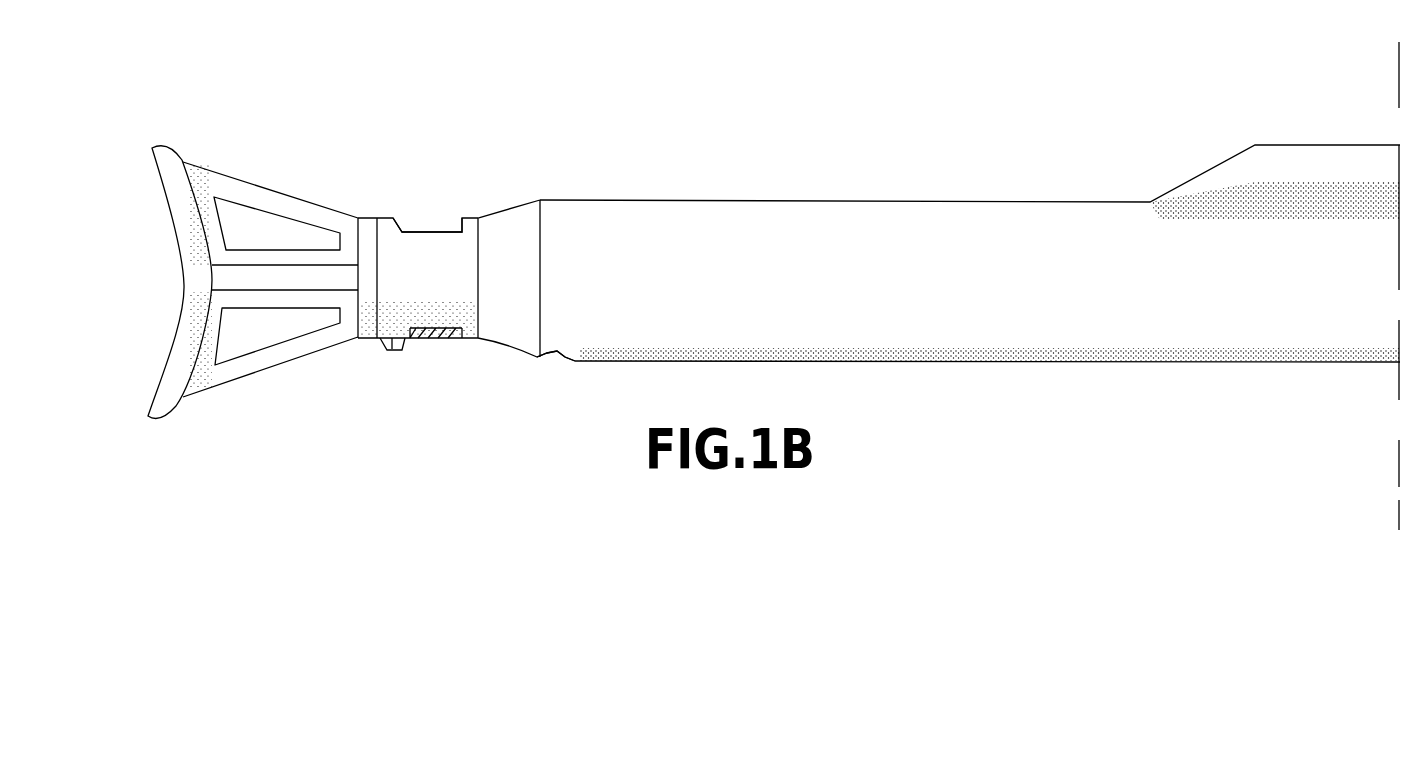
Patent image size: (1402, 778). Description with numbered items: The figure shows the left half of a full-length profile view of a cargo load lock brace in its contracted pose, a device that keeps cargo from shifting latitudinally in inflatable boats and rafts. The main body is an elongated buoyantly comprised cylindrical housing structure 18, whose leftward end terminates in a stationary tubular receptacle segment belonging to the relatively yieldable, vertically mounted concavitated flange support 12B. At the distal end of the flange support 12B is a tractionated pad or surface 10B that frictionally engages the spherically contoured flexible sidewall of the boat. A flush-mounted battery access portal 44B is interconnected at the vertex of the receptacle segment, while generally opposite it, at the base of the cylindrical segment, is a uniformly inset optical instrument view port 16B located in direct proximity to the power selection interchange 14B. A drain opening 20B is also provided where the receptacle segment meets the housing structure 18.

The tractionated pad 10B is at (177, 225).
The concavitated flange support 12B is at (267, 197).
The power selection interchange 14B is at (392, 345).
The optical instrument view port 16B is at (442, 337).
The buoyant housing structure 18 is at (822, 207).
The drain opening 20B is at (558, 357).
The battery access portal 44B is at (425, 223).